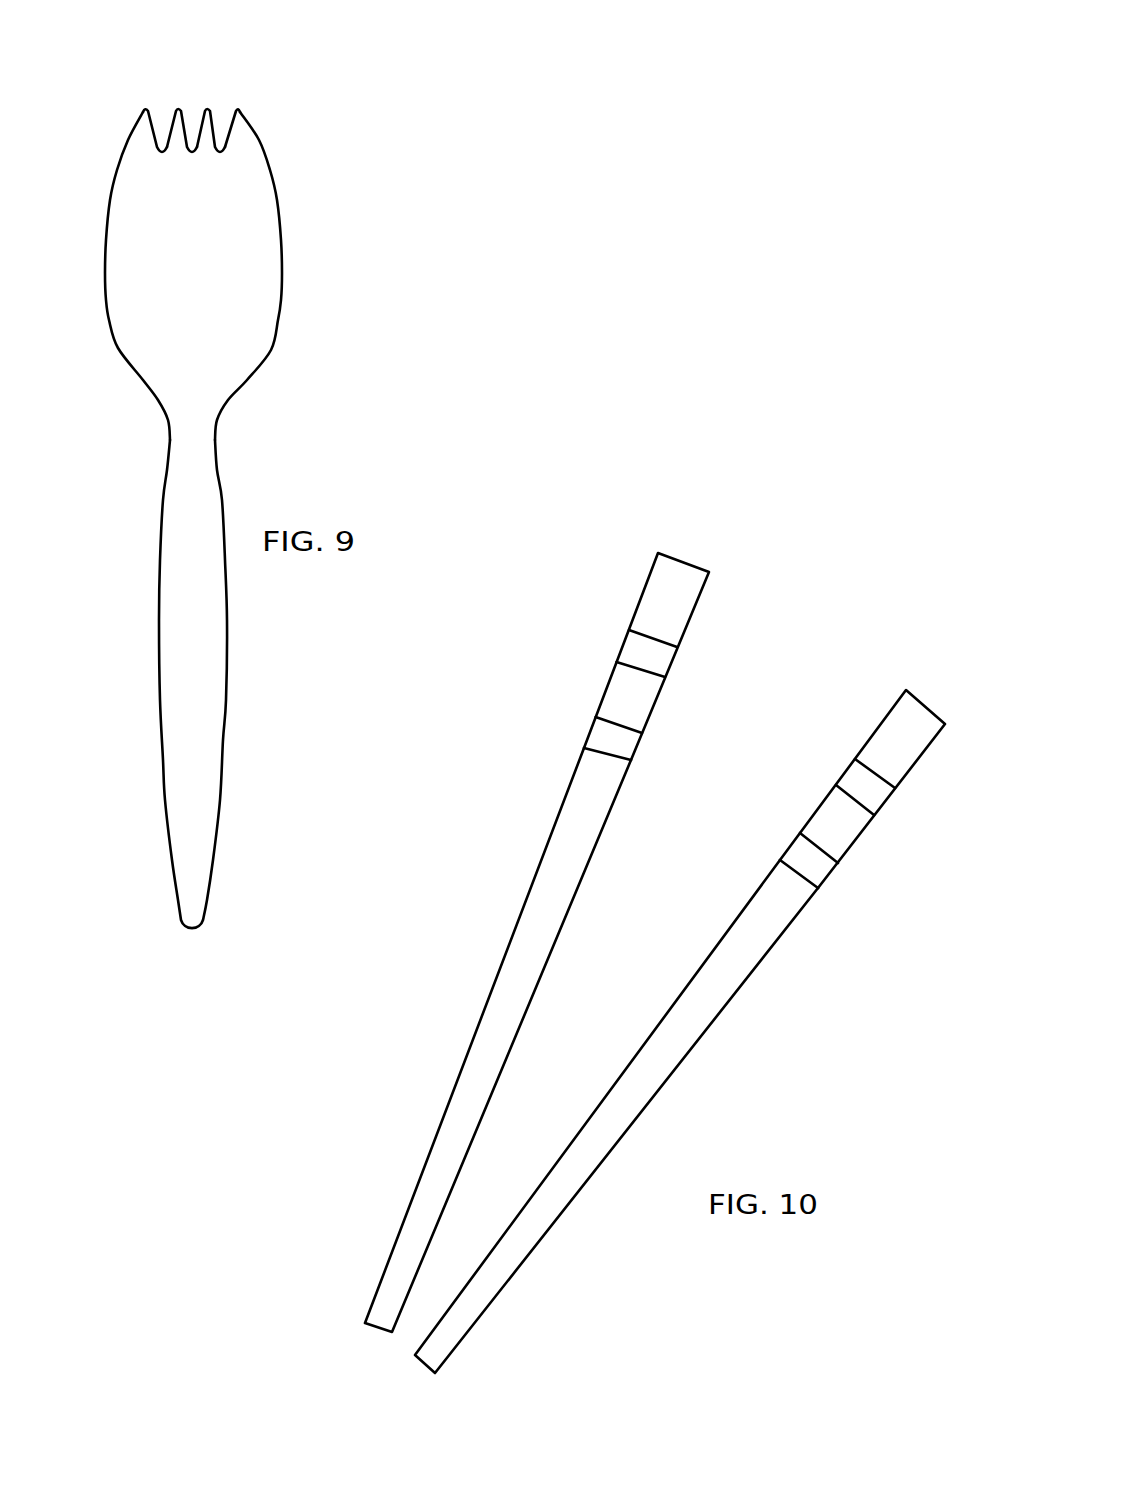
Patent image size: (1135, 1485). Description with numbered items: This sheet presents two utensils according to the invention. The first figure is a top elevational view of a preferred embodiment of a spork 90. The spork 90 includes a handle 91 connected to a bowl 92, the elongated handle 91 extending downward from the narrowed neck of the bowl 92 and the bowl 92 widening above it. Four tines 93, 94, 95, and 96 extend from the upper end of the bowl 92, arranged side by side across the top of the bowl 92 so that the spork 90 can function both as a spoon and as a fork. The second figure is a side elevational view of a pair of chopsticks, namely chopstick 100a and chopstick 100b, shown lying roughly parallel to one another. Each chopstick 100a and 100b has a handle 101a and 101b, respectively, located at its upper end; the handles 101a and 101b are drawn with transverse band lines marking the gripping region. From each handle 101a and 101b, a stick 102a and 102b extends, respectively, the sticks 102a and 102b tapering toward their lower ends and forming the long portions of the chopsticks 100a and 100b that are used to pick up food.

In FIG. 9, the spork 90 is at (118, 553).
In FIG. 9, the handle 91 is at (175, 728).
In FIG. 9, the bowl 92 is at (268, 308).
In FIG. 9, the tine 93 is at (145, 108).
In FIG. 9, the tine 94 is at (178, 108).
In FIG. 9, the tine 95 is at (207, 108).
In FIG. 9, the tine 96 is at (238, 108).
In FIG. 10, the chopstick 100a is at (417, 1008).
In FIG. 10, the chopstick 100b is at (754, 1043).
In FIG. 10, the handle 101a is at (647, 595).
In FIG. 10, the handle 101b is at (887, 728).
In FIG. 10, the stick 102a is at (442, 1153).
In FIG. 10, the stick 102b is at (537, 1243).